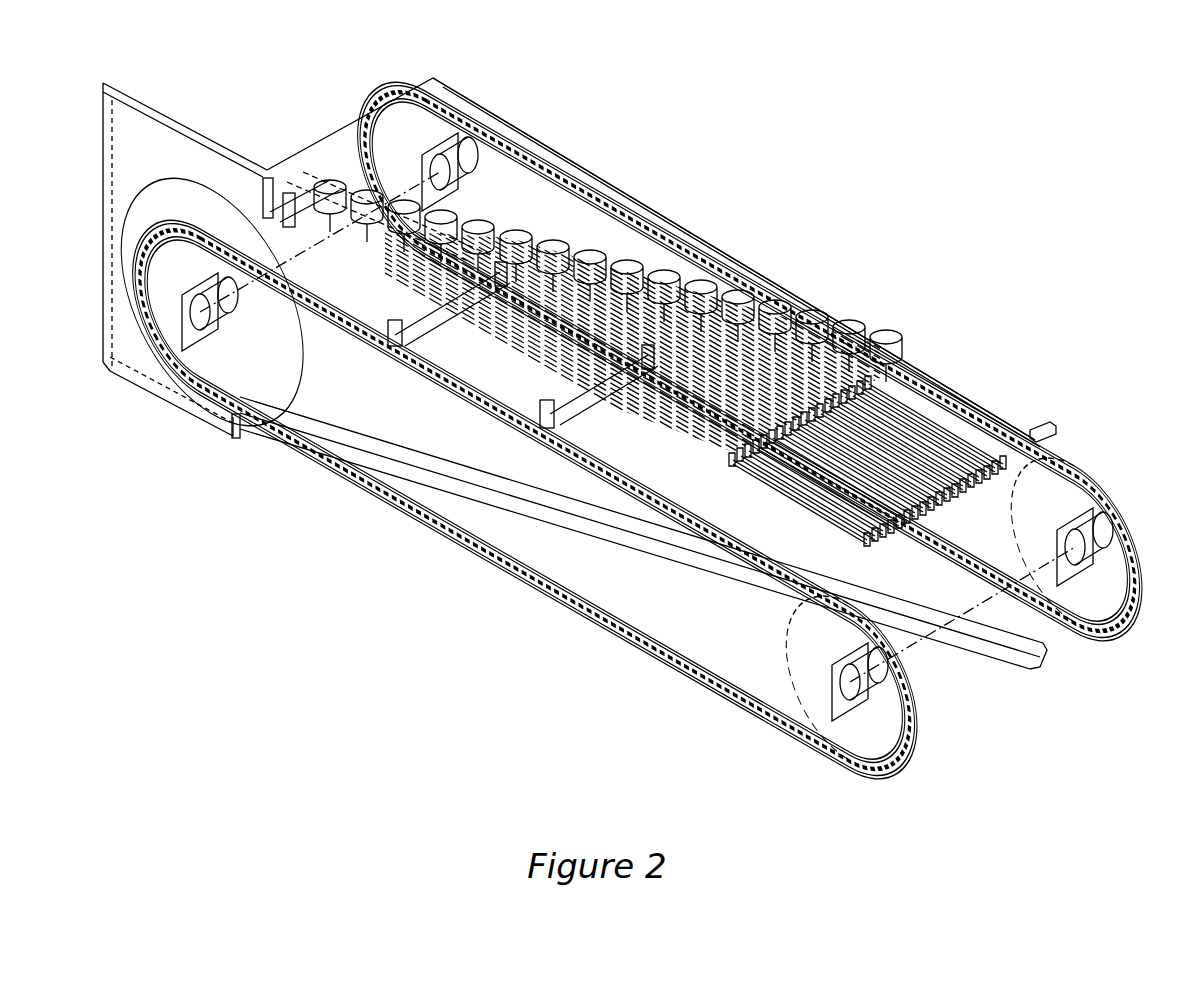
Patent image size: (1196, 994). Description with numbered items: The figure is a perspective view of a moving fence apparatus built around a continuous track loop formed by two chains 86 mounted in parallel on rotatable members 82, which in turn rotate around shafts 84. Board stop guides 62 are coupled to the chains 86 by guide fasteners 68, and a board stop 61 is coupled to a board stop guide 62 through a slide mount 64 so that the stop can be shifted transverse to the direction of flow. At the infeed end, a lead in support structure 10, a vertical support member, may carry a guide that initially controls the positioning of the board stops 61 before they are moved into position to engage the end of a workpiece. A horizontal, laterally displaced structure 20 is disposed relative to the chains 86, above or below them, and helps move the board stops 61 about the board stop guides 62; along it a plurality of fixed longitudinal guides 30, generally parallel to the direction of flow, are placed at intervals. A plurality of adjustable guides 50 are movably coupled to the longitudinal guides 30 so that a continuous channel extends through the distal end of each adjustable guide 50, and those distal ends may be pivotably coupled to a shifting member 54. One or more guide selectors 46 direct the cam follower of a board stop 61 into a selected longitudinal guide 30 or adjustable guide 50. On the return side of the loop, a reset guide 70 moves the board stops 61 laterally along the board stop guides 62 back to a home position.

The lead in support structure 10 is at (127, 330).
The laterally displaced structure 20 is at (307, 170).
The longitudinal guides 30 is at (740, 300).
The guide selectors 46 is at (888, 330).
The adjustable guides 50 is at (950, 430).
The shifting member 54 is at (1033, 437).
The board stop 61 is at (254, 416).
The board stop guides 62 is at (570, 400).
The slide mount 64 is at (430, 350).
The guide fasteners 68 is at (617, 213).
The reset guide 70 is at (1003, 650).
The rotatable members 82 is at (867, 722).
The shafts 84 is at (913, 643).
The chains 86 is at (1087, 470).